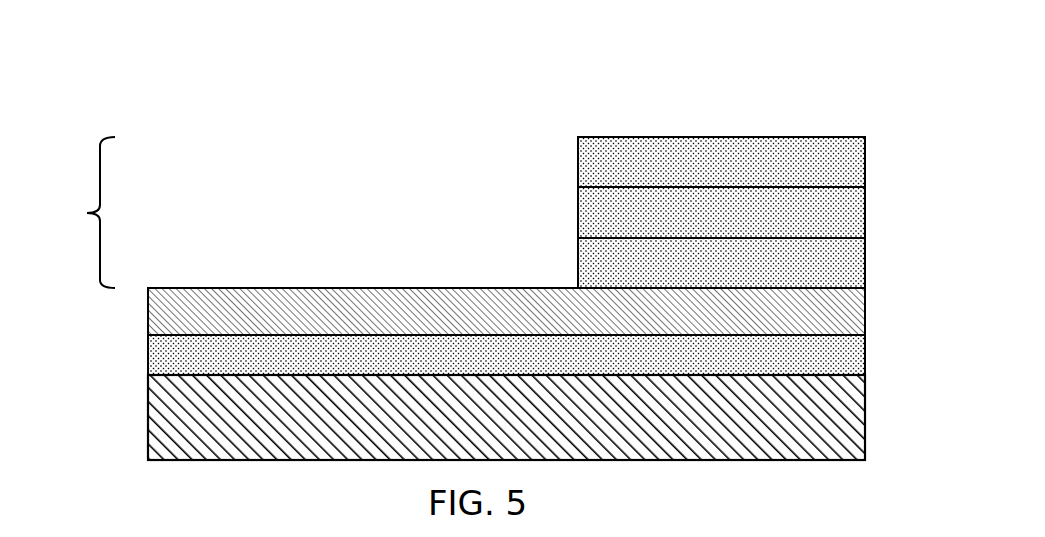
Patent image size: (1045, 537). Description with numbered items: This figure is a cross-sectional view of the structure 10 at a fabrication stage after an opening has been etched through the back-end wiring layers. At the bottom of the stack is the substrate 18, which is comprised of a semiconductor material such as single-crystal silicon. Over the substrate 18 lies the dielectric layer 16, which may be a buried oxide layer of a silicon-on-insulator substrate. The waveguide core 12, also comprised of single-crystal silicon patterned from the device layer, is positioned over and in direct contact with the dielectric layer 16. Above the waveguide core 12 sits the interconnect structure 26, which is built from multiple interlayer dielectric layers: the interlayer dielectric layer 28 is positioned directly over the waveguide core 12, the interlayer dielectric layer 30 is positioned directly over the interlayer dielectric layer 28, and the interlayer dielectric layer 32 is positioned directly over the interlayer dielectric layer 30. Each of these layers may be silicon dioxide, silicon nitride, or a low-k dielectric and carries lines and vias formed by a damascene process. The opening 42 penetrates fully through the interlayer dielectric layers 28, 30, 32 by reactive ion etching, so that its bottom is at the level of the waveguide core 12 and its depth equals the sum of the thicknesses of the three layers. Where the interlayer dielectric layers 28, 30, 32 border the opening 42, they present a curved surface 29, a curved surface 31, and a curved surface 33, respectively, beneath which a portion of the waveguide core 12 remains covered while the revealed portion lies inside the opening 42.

The structure 10 is at (150, 60).
The waveguide core 12 is at (797, 315).
The dielectric layer 16 is at (828, 360).
The substrate 18 is at (828, 428).
The interconnect structure 26 is at (81, 212).
The interlayer dielectric layer 28 is at (828, 268).
The surface 29 is at (578, 265).
The interlayer dielectric layer 30 is at (828, 216).
The surface 31 is at (578, 212).
The interlayer dielectric layer 32 is at (828, 168).
The surface 33 is at (578, 162).
The opening 42 is at (307, 257).